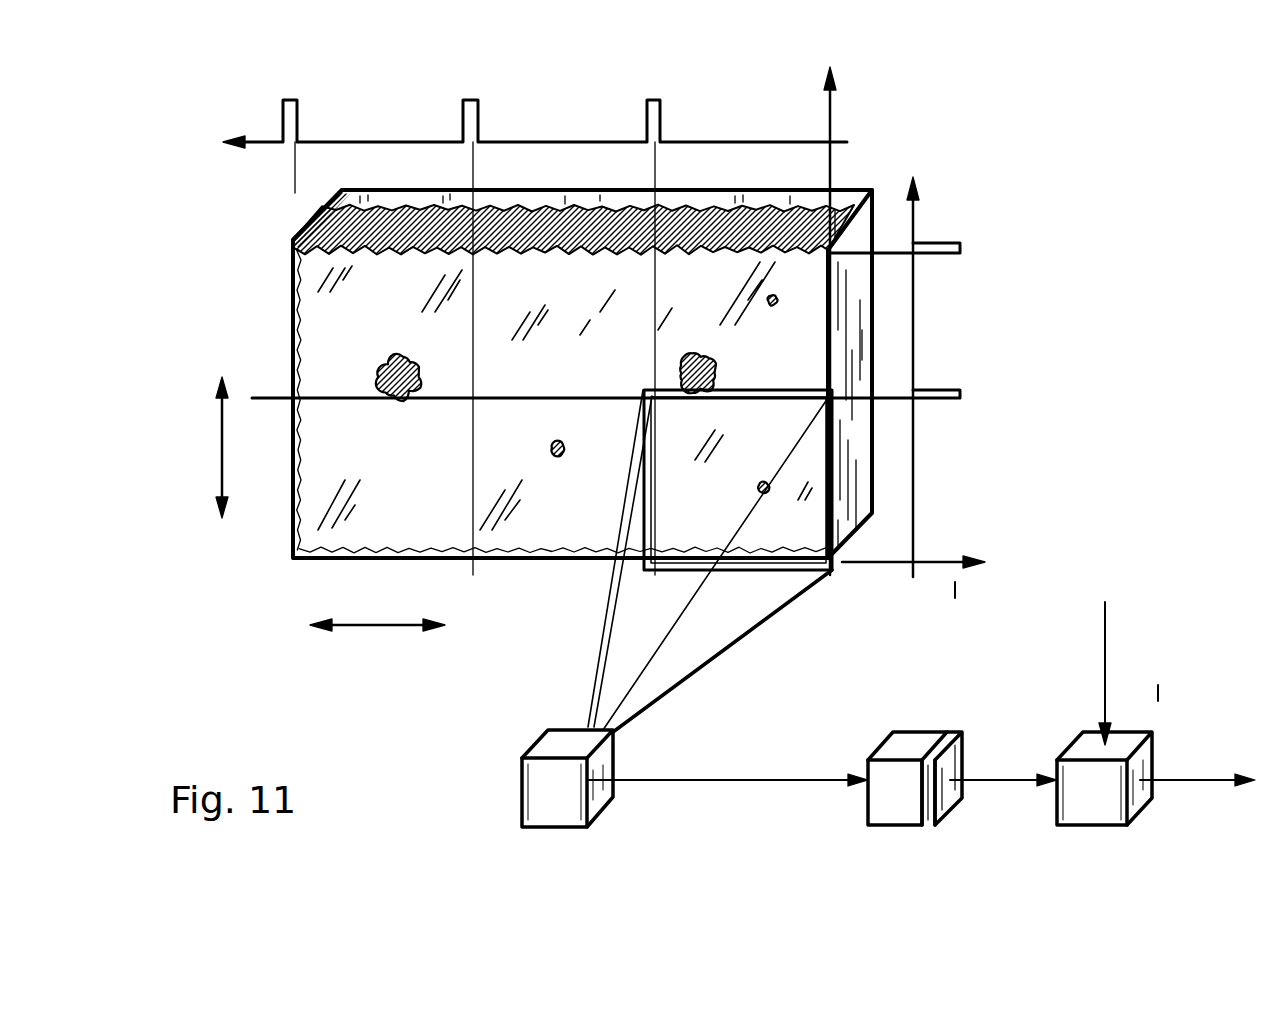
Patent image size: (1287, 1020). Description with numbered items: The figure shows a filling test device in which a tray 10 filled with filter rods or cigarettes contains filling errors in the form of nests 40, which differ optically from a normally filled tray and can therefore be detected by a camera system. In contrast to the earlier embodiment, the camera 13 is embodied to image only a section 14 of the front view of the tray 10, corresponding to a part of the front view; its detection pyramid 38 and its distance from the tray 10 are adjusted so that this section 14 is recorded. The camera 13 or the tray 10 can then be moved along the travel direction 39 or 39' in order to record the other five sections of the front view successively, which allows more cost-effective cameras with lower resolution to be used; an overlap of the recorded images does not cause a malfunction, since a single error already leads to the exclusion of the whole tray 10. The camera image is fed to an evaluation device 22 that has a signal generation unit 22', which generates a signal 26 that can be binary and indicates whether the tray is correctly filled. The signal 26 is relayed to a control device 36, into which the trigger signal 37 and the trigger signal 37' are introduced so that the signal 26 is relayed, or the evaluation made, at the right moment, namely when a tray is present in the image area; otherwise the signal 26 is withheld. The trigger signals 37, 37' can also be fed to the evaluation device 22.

The tray 10 is at (850, 342).
The camera 13 is at (537, 787).
The scanned image window 14 is at (800, 519).
The evaluation device 22 is at (962, 733).
The signal generation unit 22' is at (980, 733).
The signal 26 is at (1185, 787).
The control device 36 is at (1082, 807).
The trigger signal 37 is at (728, 347).
The trigger signal 37' is at (522, 306).
The detection pyramid 38 is at (758, 646).
The travel direction 39 is at (156, 450).
The travel direction 39' is at (377, 678).
The nests 40 is at (690, 355).